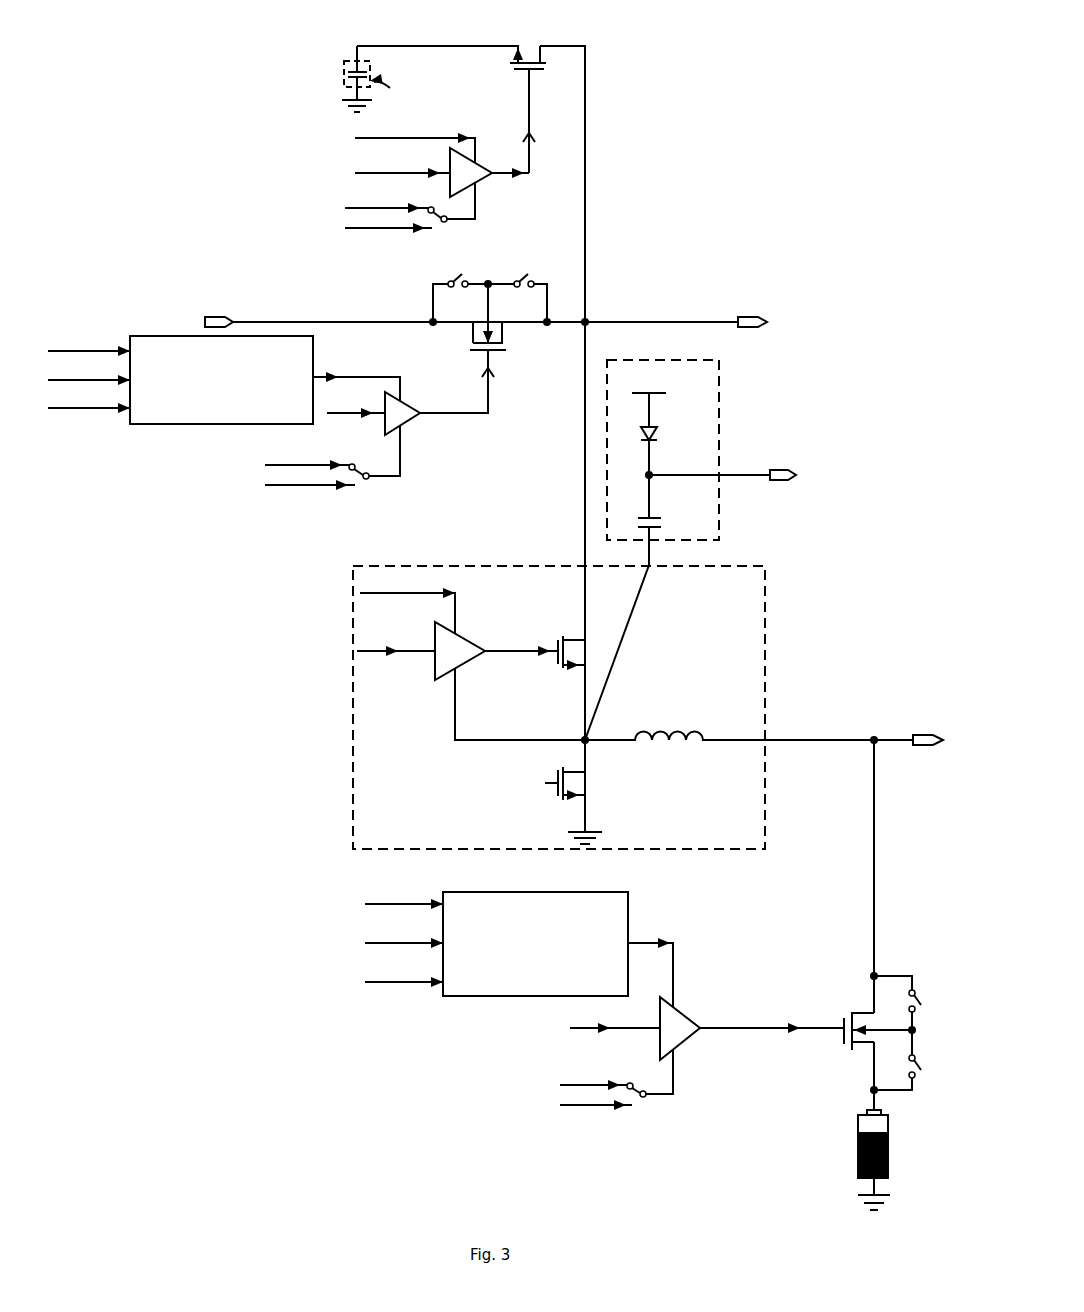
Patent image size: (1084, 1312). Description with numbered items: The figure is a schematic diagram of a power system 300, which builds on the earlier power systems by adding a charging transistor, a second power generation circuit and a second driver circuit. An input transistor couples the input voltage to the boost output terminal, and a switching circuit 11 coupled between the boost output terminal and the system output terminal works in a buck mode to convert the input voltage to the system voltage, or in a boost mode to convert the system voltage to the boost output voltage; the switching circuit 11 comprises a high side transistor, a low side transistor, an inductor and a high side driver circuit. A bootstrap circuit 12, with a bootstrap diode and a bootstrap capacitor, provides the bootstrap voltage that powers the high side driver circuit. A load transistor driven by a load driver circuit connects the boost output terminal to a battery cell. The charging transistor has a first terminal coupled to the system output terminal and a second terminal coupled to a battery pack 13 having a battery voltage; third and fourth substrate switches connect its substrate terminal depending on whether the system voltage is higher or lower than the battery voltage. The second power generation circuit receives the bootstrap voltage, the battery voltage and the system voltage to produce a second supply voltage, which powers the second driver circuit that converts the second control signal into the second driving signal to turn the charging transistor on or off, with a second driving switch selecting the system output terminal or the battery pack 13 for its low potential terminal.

The power system 300 is at (780, 50).
The switching circuit 11 is at (740, 856).
The bootstrap circuit 12 is at (724, 532).
The battery pack 13 is at (894, 1155).